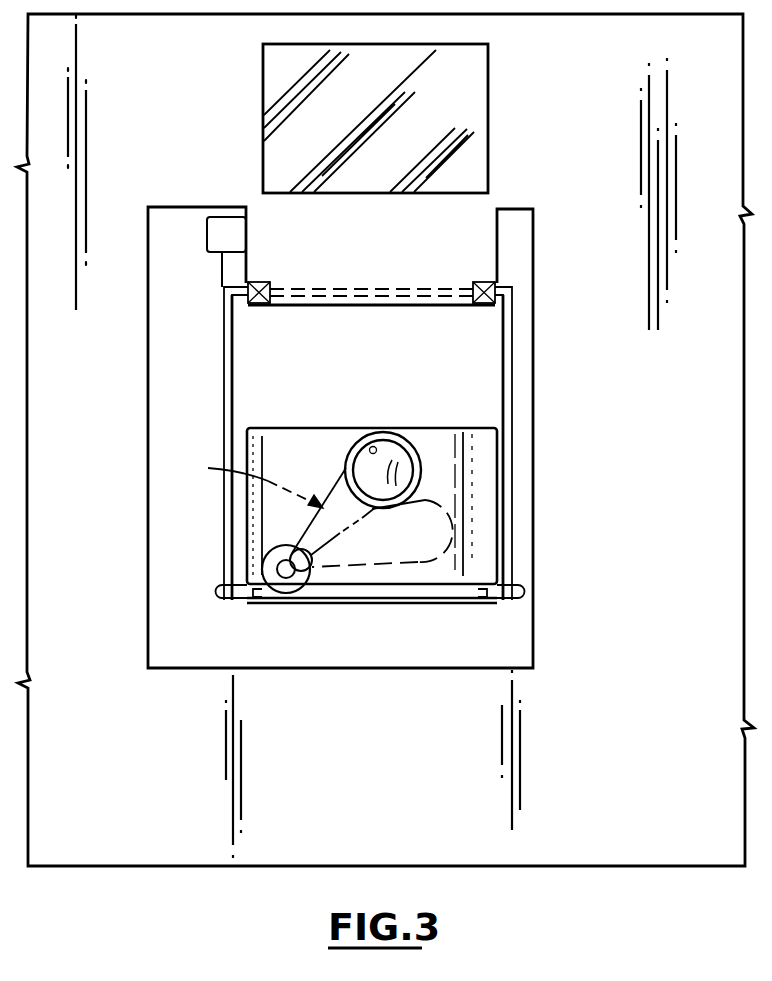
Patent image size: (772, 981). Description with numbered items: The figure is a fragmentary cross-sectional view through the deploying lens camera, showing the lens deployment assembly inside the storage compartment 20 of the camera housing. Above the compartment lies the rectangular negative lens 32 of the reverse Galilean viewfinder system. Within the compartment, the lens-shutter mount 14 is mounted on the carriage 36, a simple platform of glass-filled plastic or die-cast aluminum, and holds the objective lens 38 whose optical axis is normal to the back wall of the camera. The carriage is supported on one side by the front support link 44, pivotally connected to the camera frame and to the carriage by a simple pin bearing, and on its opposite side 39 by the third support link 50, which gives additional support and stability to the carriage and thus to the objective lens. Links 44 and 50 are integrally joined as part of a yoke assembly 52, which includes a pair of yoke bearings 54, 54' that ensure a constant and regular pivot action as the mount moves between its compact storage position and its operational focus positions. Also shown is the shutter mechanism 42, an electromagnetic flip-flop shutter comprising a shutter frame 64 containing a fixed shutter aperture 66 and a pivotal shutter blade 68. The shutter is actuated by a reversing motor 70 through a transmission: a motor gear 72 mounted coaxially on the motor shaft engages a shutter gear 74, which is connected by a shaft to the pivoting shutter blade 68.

The lens-shutter mount 14 is at (475, 428).
The storage compartment 20 is at (321, 665).
The rectangular negative lens 32 is at (473, 102).
The carriage 36 is at (273, 606).
The objective lens 38 is at (388, 468).
The opposite side 39 is at (500, 602).
The shutter mechanism 42 is at (250, 482).
The front support link 44 is at (233, 395).
The third support link 50 is at (503, 378).
The yoke assembly 52 is at (370, 290).
The yoke bearing 54 is at (286, 261).
The yoke bearing 54' is at (461, 261).
The shutter frame 64 is at (330, 502).
The fixed shutter aperture 66 is at (371, 447).
The pivotal shutter blade 68 is at (408, 570).
The reversing motor 70 is at (272, 560).
The motor gear 72 is at (291, 580).
The shutter gear 74 is at (312, 567).